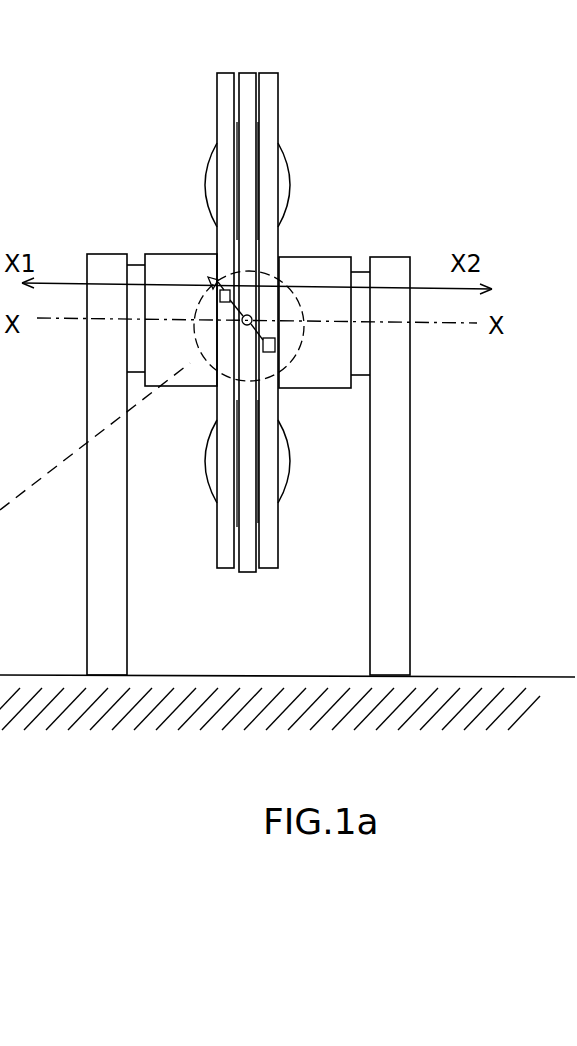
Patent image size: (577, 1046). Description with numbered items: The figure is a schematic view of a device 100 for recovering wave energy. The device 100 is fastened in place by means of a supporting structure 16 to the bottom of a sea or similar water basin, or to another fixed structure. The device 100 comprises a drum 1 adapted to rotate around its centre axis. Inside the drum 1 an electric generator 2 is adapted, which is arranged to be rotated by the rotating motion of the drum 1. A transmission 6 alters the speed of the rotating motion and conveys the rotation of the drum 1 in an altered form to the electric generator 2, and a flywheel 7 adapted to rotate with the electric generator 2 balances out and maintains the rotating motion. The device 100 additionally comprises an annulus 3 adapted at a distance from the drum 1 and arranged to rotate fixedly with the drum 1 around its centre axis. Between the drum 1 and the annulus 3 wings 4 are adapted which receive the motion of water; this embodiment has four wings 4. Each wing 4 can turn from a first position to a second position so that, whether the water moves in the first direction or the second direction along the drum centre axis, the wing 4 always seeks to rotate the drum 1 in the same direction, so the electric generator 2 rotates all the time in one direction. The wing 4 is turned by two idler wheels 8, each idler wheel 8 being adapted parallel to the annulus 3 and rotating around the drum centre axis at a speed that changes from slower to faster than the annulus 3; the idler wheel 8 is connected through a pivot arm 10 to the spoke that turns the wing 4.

The device 100 is at (446, 126).
The drum 1 is at (330, 257).
The electric generator 2 is at (334, 226).
The annulus 3 is at (245, 562).
The wing 4 is at (285, 179).
The transmission 6 is at (154, 232).
The flywheel 7 is at (122, 230).
The idler wheel 8 is at (226, 545).
The pivot arm 10 is at (254, 322).
The supporting structure 16 is at (103, 550).